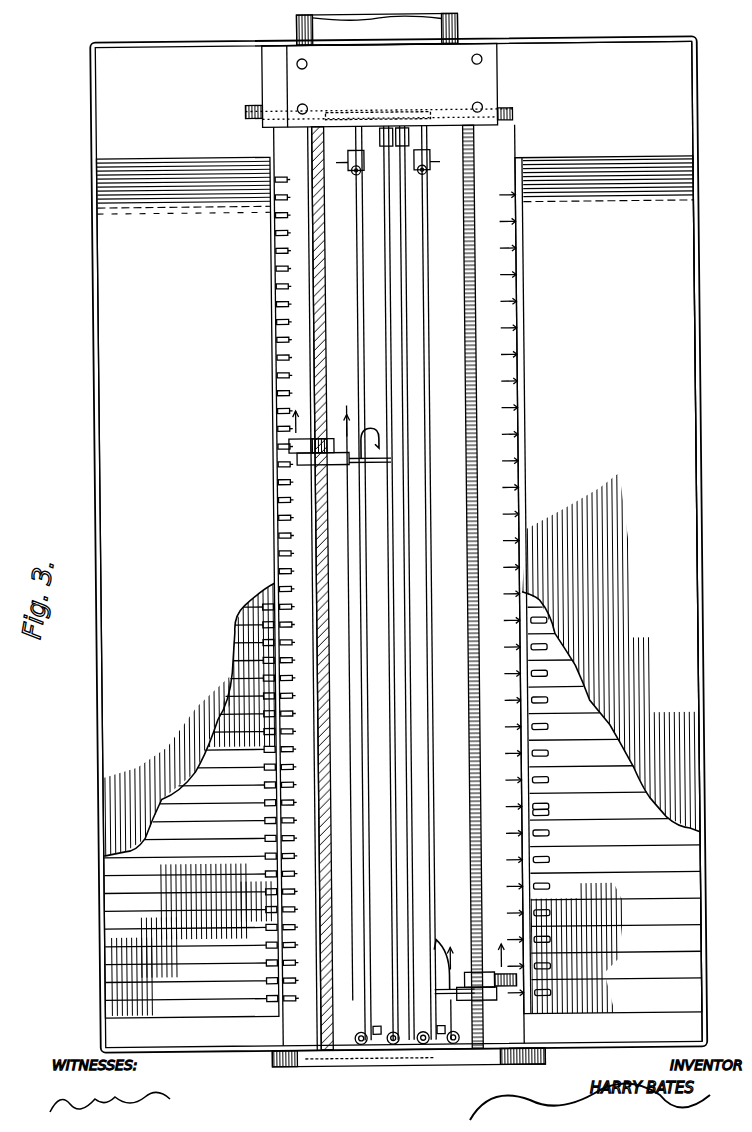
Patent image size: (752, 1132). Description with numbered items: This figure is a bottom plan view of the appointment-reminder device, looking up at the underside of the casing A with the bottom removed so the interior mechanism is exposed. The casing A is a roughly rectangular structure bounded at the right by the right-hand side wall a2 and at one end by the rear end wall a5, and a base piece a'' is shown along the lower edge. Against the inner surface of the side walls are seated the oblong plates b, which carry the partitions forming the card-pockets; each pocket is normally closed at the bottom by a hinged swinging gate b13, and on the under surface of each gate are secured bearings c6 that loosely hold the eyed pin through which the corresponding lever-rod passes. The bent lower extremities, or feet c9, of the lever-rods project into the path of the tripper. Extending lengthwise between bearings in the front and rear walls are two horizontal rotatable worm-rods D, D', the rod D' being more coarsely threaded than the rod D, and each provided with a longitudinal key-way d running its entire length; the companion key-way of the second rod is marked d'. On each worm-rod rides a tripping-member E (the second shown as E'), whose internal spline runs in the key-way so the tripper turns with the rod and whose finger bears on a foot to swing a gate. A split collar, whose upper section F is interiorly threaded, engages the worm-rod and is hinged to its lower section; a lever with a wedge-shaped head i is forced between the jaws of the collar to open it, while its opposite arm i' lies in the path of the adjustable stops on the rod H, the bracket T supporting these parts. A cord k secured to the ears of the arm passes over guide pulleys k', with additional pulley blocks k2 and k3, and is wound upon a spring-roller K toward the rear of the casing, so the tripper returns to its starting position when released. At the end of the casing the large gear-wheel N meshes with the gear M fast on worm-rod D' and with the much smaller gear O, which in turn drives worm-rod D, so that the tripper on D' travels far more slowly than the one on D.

The casing A is at (702, 1002).
The rear end wall a5 is at (606, 44).
The right-hand side wall a2 is at (702, 862).
The base plate a'' is at (409, 1077).
The large gear-wheel N is at (405, 120).
The gear O is at (250, 111).
The gear M is at (517, 115).
The worm-rod D is at (202, 587).
The key-way d is at (284, 589).
The worm-rod D' is at (565, 583).
The pins on right plate d' is at (478, 594).
The plate b is at (697, 950).
The swinging gate b13 is at (630, 1022).
The bearings c6 is at (546, 678).
The feet c9 is at (528, 815).
The spring-roller K is at (347, 588).
The rod H is at (395, 583).
The tripping-member E is at (333, 702).
The lower rod E' is at (458, 990).
The upper section of split collar F is at (305, 465).
The bracket arm T is at (366, 465).
The wedge-shaped head i is at (369, 443).
The lever-arm i' is at (431, 964).
The cord k is at (377, 590).
The pulleys k' is at (418, 1077).
The pulley block k2 is at (436, 1034).
The pulley k3 is at (374, 1026).